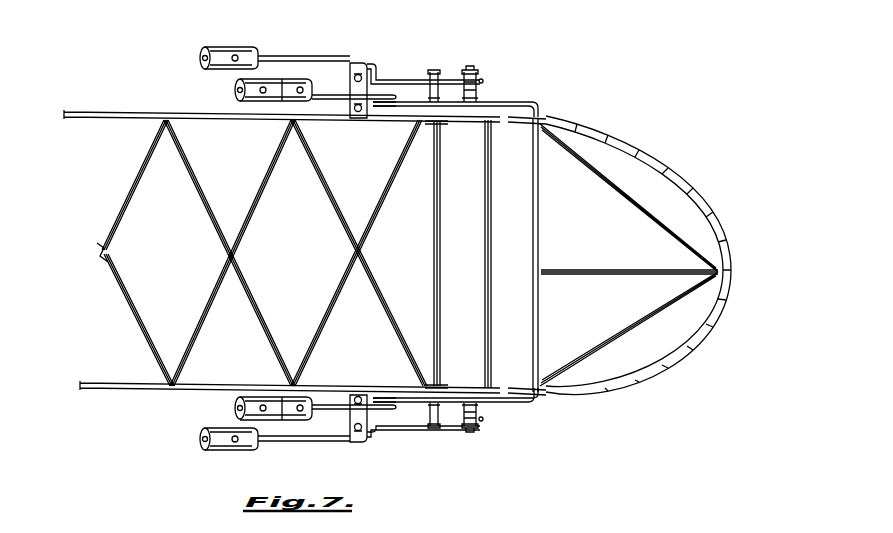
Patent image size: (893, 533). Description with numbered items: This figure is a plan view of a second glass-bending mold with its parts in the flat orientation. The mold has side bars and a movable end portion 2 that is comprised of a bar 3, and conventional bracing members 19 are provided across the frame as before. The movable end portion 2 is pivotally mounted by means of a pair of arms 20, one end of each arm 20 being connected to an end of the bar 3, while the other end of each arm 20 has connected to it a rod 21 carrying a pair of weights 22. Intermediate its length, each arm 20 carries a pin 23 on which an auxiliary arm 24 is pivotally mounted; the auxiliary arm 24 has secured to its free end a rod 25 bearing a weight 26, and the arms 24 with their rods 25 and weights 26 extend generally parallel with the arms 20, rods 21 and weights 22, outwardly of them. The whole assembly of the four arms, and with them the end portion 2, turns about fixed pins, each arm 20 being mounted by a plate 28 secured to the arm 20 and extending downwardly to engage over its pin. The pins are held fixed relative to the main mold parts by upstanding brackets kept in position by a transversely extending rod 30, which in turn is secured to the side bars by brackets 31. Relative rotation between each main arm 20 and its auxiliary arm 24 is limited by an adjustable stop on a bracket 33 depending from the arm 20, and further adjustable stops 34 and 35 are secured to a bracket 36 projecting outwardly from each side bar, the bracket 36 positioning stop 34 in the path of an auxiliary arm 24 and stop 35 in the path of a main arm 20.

The movable end portion 2 is at (609, 118).
The bar 3 is at (665, 162).
The bracing members 19 is at (253, 197).
The arms 20 is at (403, 116).
The rod 21 is at (335, 102).
The weights 22 is at (287, 83).
The pin 23 is at (482, 82).
The auxiliary arm 24 is at (407, 78).
The rod 25 is at (322, 60).
The weight 26 is at (223, 58).
The plate 28 is at (482, 73).
The transversely extending rod 30 is at (438, 340).
The brackets 31 is at (447, 128).
The bracket 33 is at (433, 72).
The adjustable stop 34 is at (365, 65).
The adjustable stop 35 is at (373, 97).
The bracket 36 is at (355, 87).